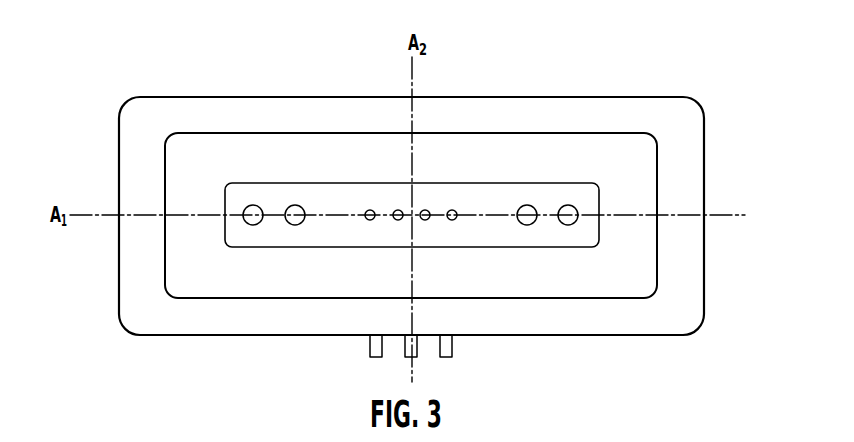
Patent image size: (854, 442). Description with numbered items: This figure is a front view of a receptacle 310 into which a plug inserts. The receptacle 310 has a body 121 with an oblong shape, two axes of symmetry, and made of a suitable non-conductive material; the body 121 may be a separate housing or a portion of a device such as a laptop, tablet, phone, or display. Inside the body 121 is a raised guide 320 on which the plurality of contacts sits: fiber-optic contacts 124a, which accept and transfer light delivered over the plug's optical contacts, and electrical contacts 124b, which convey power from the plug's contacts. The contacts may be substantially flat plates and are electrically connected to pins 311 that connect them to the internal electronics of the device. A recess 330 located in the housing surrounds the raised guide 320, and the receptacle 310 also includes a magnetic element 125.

The receptacle 310 is at (105, 192).
The body 121 is at (650, 105).
The raised guide 320 is at (592, 235).
The fiber-optic contacts 124a is at (295, 205).
The electrical contacts 124b is at (452, 210).
The pins 311 is at (452, 344).
The recess 330 is at (208, 283).
The magnetic element 125 is at (577, 260).